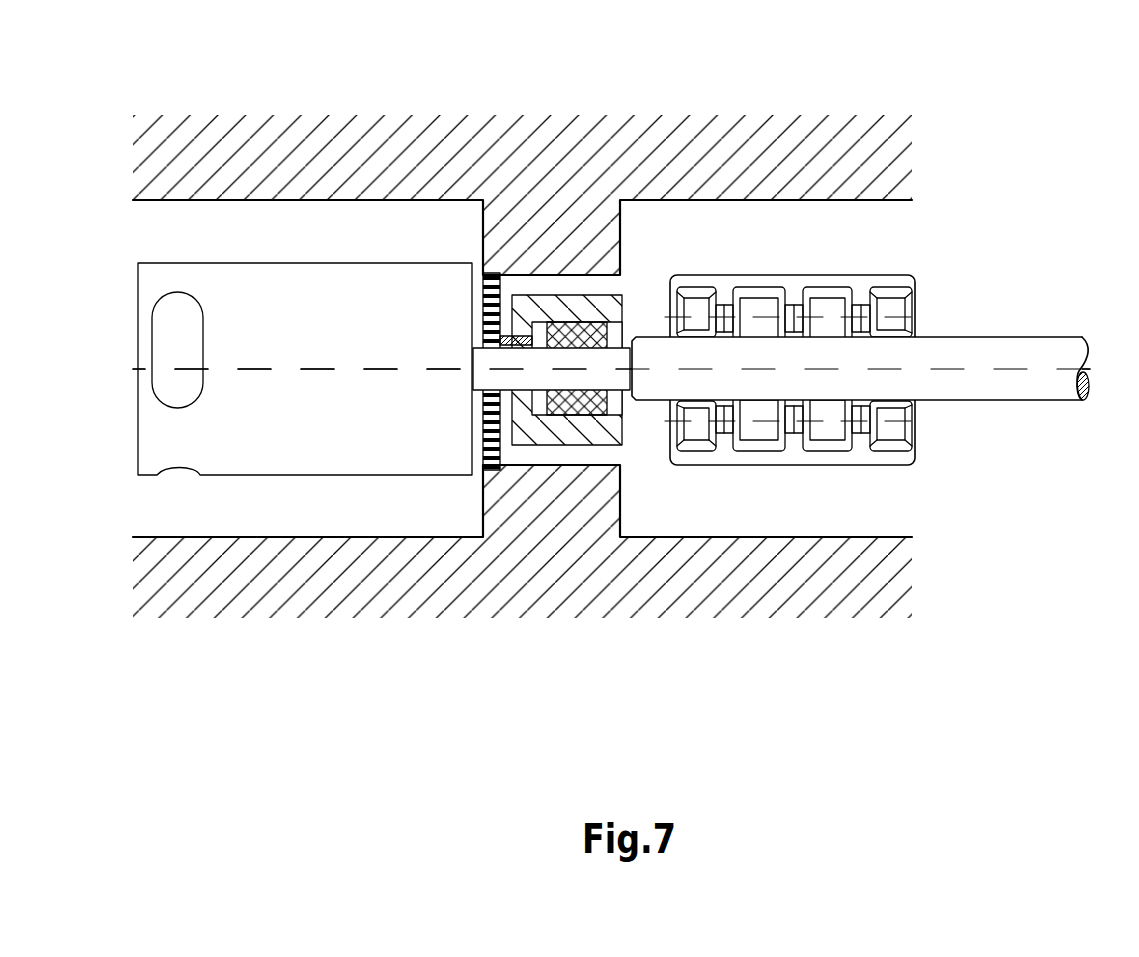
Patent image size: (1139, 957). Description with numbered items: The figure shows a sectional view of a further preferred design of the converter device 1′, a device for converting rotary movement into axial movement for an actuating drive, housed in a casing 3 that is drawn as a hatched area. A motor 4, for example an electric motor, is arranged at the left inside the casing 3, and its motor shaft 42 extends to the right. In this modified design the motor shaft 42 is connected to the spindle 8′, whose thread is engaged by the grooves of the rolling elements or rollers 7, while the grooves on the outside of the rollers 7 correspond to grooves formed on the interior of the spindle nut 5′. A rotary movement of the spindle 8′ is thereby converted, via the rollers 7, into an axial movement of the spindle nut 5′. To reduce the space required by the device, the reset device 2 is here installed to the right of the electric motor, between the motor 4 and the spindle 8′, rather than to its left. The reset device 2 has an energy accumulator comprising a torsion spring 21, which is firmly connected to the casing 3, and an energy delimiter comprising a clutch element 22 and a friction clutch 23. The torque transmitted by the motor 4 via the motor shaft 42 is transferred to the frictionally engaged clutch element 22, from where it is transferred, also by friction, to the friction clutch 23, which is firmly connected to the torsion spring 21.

The converter device 1′ is at (623, 362).
The reset device 2 is at (614, 344).
The casing 3 is at (235, 143).
The motor 4 is at (170, 428).
The spindle nut 5′ is at (893, 282).
The rolling elements or rollers 7 is at (903, 318).
The spindle 8′ is at (1022, 358).
The torsion spring 21 is at (492, 460).
The clutch element 22 is at (571, 393).
The friction clutch 23 is at (554, 305).
The motor shaft 42 is at (485, 359).